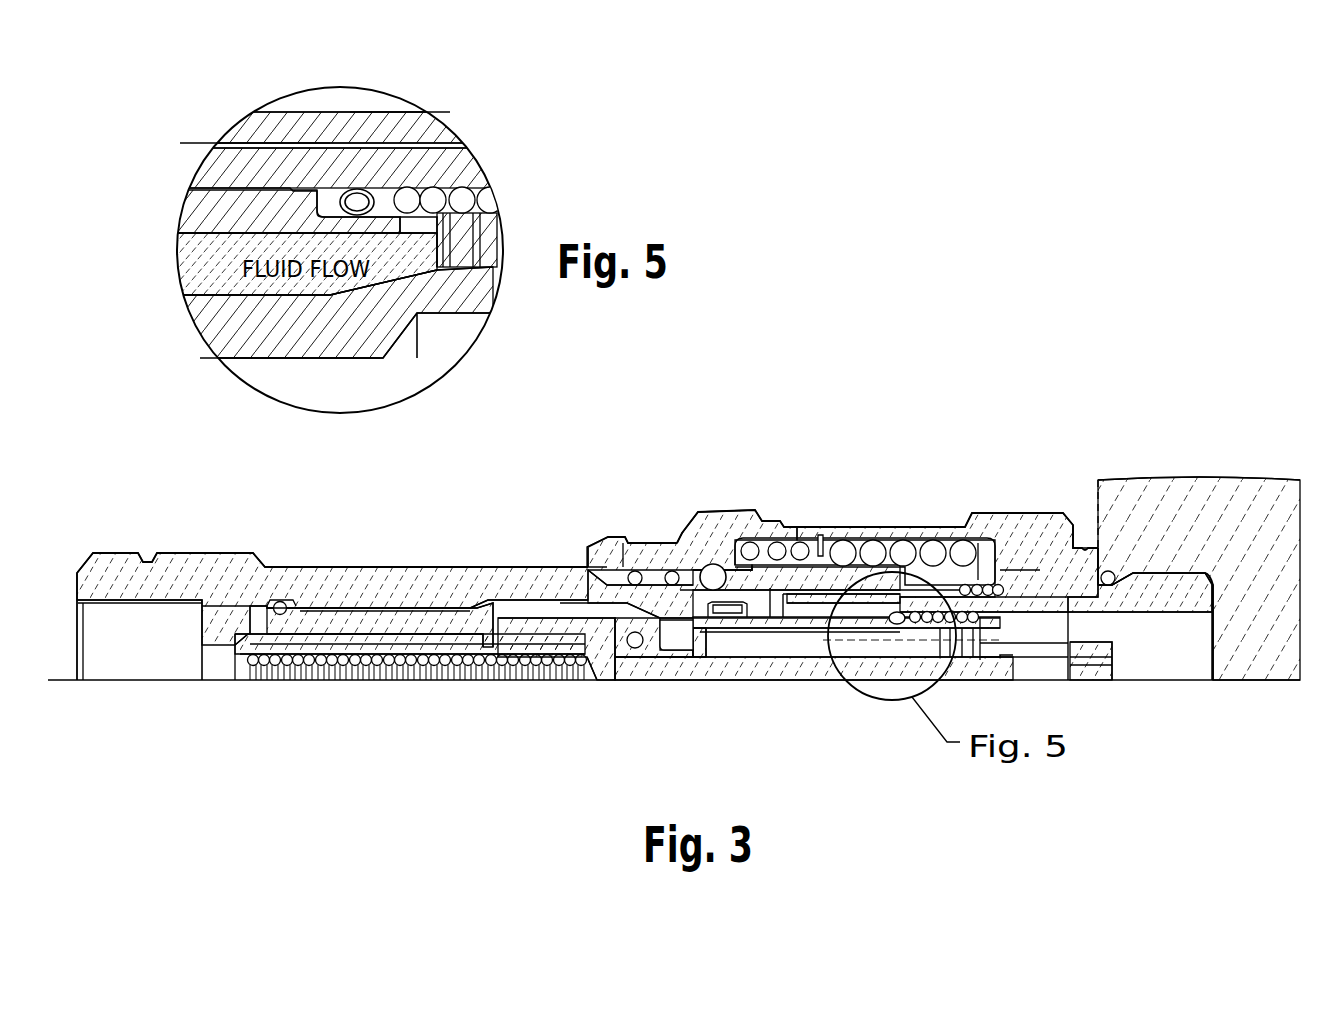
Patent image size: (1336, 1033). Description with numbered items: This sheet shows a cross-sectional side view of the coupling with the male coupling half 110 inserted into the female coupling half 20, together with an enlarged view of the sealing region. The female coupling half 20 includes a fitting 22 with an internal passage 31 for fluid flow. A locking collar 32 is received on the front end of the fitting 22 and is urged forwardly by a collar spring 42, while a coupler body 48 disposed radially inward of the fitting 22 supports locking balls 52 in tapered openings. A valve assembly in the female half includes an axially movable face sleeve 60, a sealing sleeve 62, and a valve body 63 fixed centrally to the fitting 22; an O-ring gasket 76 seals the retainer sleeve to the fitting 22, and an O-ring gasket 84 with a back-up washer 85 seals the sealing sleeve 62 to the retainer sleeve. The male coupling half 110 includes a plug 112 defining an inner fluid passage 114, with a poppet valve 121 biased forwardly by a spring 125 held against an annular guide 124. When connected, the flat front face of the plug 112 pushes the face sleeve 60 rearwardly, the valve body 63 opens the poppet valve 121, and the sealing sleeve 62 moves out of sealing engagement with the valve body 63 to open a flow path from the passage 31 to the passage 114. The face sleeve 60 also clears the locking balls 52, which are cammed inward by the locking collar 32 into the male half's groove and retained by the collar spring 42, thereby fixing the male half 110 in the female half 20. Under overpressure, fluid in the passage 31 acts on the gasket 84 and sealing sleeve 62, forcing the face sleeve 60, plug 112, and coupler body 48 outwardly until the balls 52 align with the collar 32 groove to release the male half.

In FIG. 3, the female coupling half 20 is at (1056, 455).
In FIG. 3, the fitting 22 is at (1105, 500).
In FIG. 3, the internal cavity or passage 31 is at (1166, 670).
In FIG. 3, the locking collar 32 is at (677, 543).
In FIG. 3, the collar spring 42 is at (802, 552).
In FIG. 3, the coupler body 48 is at (642, 578).
In FIG. 3, the locking balls 52 is at (713, 575).
In FIG. 5, the face sleeve 60 is at (218, 217).
In FIG. 3, the face sleeve 60 is at (862, 623).
In FIG. 5, the sealing sleeve 62 is at (220, 170).
In FIG. 3, the sealing sleeve 62 is at (720, 622).
In FIG. 5, the valve body 63 is at (248, 337).
In FIG. 3, the valve body 63 is at (622, 655).
In FIG. 5, the O-ring gasket 76 is at (373, 160).
In FIG. 5, the O-ring gasket 84 is at (363, 203).
In FIG. 3, the O-ring gasket 84 is at (897, 612).
In FIG. 5, the back-up washer 85 is at (332, 198).
In FIG. 3, the male coupling half 110 is at (380, 542).
In FIG. 3, the valve or plug 112 is at (500, 577).
In FIG. 3, the inner fluid passage 114 is at (113, 645).
In FIG. 3, the poppet valve 121 is at (537, 637).
In FIG. 3, the annular guide 124 is at (307, 622).
In FIG. 3, the spring 125 is at (273, 610).